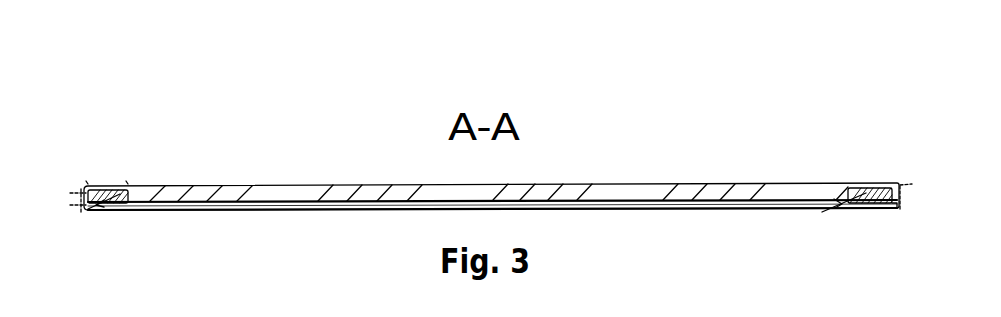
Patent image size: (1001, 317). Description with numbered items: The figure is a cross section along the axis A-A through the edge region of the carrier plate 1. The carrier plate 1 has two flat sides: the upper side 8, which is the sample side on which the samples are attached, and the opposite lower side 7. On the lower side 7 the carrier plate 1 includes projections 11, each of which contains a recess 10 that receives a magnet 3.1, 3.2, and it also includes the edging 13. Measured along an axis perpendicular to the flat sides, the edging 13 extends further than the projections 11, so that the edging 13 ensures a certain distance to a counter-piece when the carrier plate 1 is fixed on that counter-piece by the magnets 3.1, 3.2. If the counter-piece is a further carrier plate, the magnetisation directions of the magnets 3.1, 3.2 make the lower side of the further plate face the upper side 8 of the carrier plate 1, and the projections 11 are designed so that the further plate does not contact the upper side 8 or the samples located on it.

The carrier plate 1 is at (491, 112).
The upper side 8 is at (492, 143).
The lower side 7 is at (492, 253).
The recess 10 is at (512, 158).
The magnet 3.1 is at (75, 236).
The magnet 3.2 is at (865, 236).
The projection 11 is at (819, 235).
The edging 13 is at (917, 245).